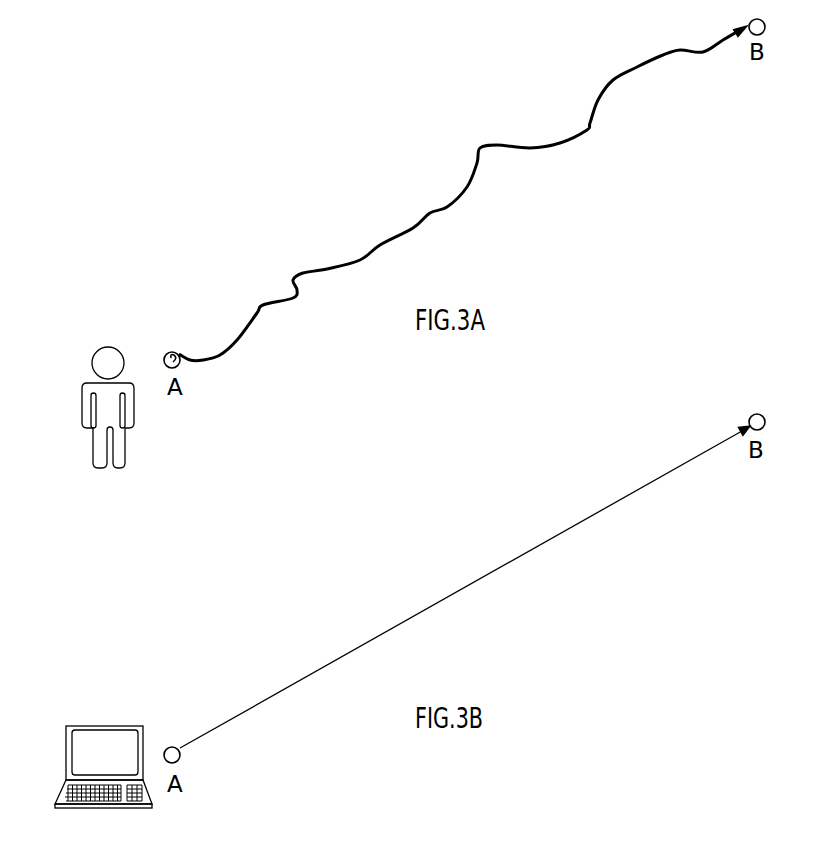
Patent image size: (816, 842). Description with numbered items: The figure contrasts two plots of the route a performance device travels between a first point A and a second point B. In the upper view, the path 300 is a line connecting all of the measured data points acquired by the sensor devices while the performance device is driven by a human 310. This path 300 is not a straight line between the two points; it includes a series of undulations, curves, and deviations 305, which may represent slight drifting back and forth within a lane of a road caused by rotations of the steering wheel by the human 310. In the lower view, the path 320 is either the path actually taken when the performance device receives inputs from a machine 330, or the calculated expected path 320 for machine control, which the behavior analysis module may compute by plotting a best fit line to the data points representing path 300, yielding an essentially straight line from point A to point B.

In FIG. 3A, the path 300 is at (480, 147).
In FIG. 3A, the deviations 305 is at (288, 281).
In FIG. 3A, the human 310 is at (85, 357).
In FIG. 3B, the expected path 320 is at (440, 599).
In FIG. 3B, the machine 330 is at (102, 717).